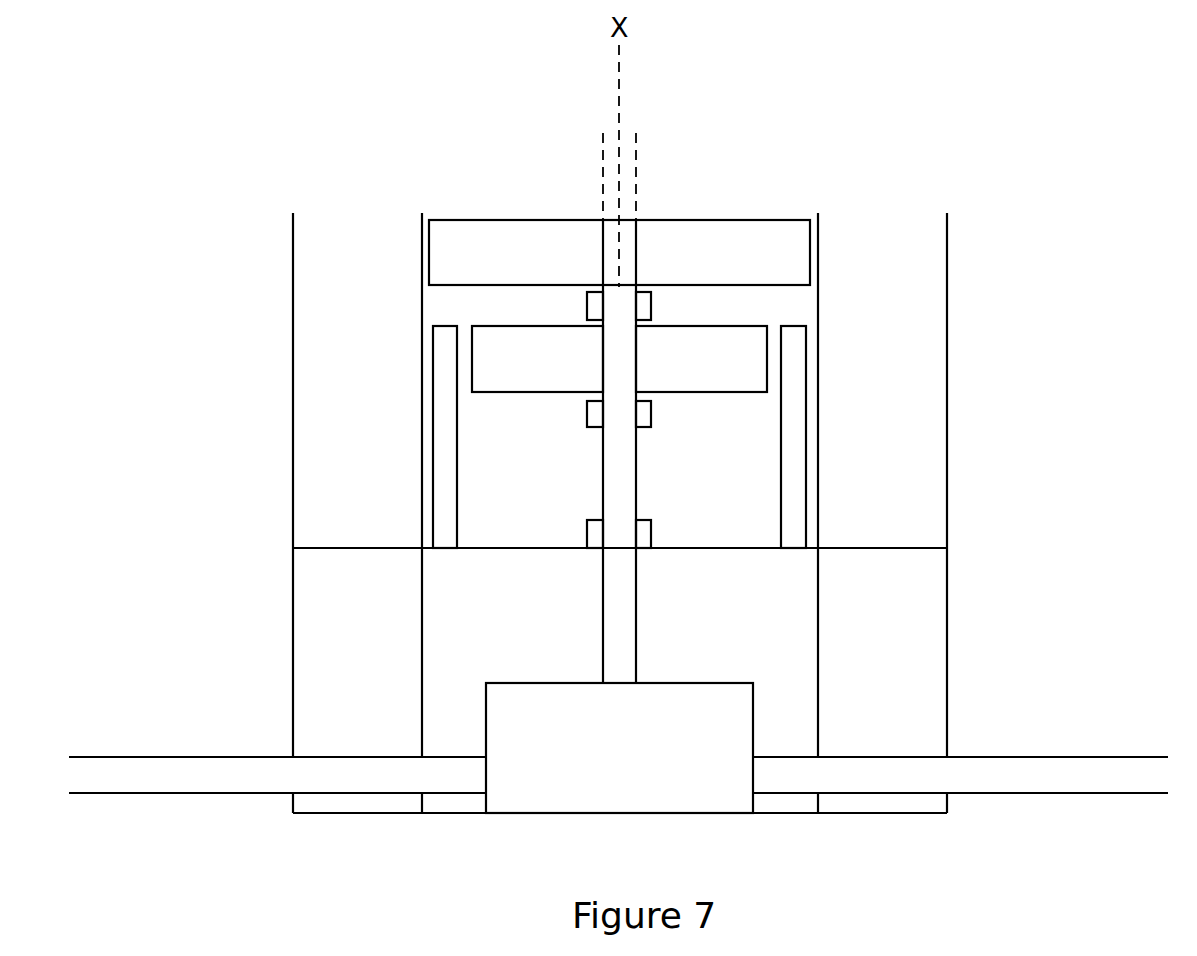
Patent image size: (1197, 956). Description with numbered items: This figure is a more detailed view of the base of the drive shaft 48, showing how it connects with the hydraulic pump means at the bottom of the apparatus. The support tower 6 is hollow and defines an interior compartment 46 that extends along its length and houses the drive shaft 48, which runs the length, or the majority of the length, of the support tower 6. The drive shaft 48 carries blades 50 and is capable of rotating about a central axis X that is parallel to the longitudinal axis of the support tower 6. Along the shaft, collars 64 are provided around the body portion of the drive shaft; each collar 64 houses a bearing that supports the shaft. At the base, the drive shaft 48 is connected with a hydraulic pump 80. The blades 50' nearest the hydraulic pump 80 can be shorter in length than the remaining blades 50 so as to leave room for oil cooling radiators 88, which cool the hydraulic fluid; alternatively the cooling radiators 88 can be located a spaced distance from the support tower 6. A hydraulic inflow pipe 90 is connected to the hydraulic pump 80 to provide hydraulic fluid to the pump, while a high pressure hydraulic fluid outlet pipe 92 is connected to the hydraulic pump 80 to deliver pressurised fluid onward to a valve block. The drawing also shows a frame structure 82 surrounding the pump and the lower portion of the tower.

The support tower 6 is at (975, 342).
The interior compartment 46 is at (532, 300).
The drive shaft 48 is at (618, 268).
The blades 50 is at (619, 209).
The blades 50' is at (494, 349).
The collar 64 is at (596, 305).
The hydraulic pump 80 is at (713, 710).
The frame 82 is at (455, 658).
The oil cooling radiators 88 is at (443, 448).
The hydraulic inflow pipe 90 is at (198, 777).
The high pressure hydraulic fluid outlet pipe 92 is at (1062, 778).